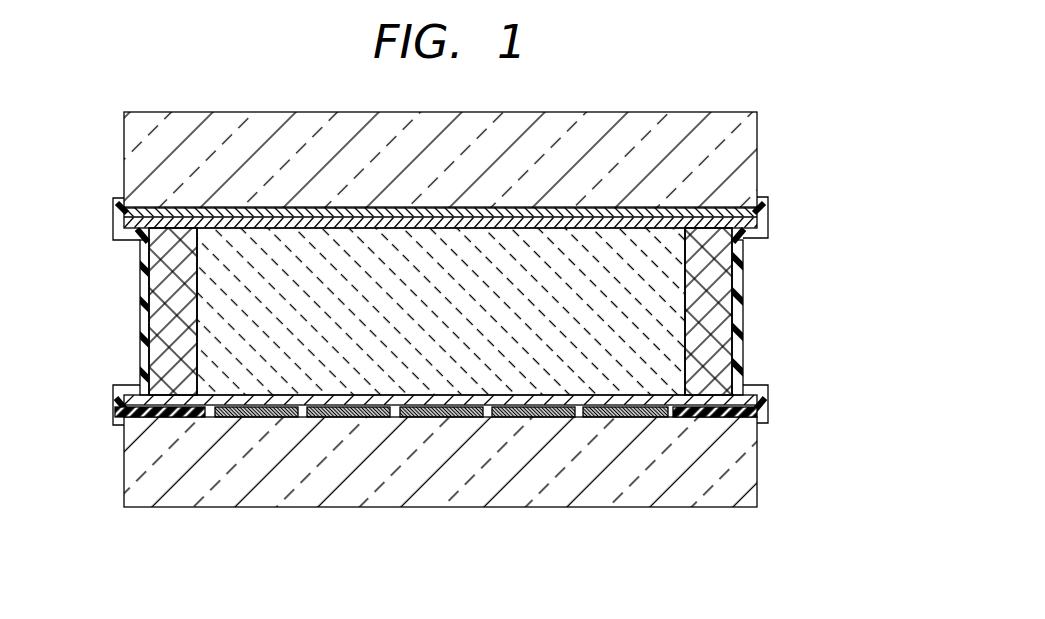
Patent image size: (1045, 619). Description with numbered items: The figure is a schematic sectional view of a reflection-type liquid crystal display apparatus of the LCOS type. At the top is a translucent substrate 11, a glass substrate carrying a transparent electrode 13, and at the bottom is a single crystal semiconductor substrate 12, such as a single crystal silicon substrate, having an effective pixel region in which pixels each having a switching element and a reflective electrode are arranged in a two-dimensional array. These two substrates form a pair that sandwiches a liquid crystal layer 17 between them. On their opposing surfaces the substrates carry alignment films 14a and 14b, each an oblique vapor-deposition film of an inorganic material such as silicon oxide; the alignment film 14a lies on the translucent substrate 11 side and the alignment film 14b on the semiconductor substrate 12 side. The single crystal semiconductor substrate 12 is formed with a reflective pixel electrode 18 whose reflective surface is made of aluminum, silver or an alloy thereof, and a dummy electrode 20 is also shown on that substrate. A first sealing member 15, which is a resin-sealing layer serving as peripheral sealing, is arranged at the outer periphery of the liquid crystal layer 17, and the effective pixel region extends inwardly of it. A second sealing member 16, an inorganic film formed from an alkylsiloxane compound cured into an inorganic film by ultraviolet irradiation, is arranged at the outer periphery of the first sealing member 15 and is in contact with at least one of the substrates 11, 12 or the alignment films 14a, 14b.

The translucent substrate 11 is at (722, 127).
The single crystal semiconductor substrate 12 is at (683, 490).
The transparent electrode 13 is at (732, 206).
The alignment film 14a is at (742, 219).
The alignment film 14b is at (752, 387).
The first sealing member 15 is at (736, 281).
The second sealing member 16 is at (737, 335).
The liquid crystal layer 17 is at (213, 300).
The reflective pixel electrode 18 is at (545, 417).
The dummy electrode 20 is at (735, 416).